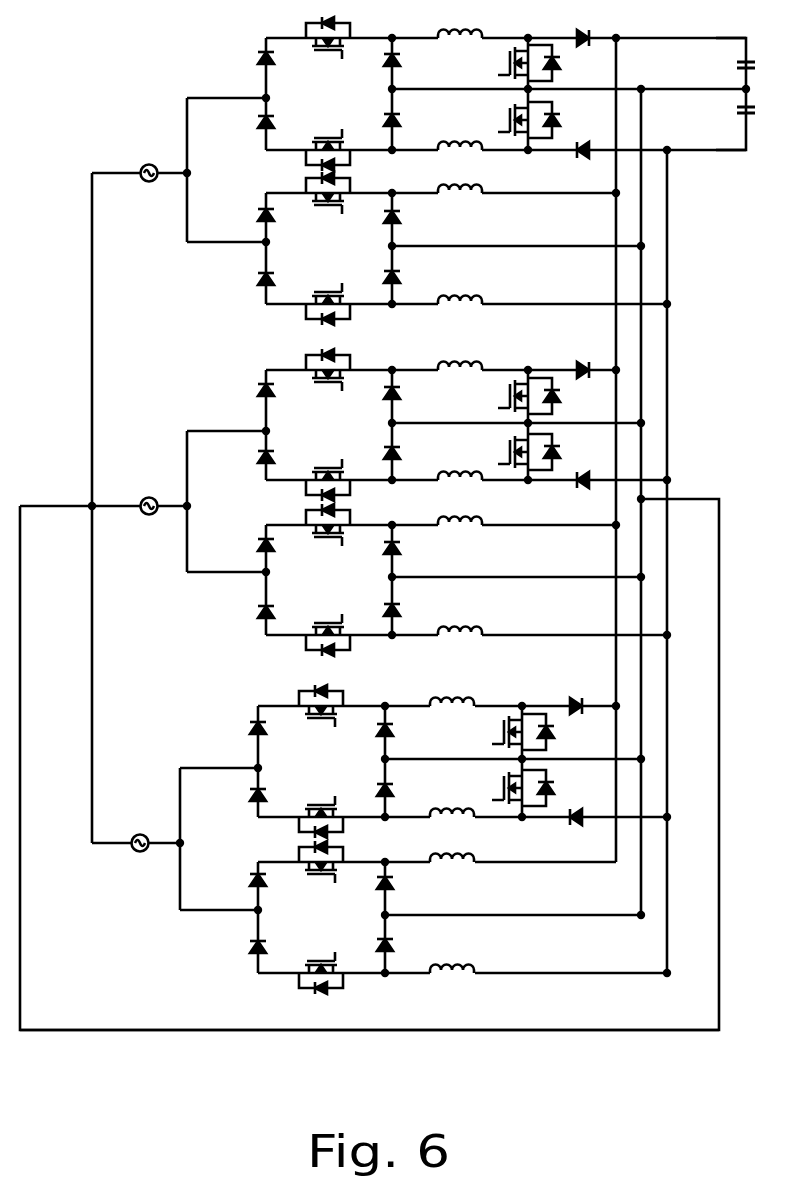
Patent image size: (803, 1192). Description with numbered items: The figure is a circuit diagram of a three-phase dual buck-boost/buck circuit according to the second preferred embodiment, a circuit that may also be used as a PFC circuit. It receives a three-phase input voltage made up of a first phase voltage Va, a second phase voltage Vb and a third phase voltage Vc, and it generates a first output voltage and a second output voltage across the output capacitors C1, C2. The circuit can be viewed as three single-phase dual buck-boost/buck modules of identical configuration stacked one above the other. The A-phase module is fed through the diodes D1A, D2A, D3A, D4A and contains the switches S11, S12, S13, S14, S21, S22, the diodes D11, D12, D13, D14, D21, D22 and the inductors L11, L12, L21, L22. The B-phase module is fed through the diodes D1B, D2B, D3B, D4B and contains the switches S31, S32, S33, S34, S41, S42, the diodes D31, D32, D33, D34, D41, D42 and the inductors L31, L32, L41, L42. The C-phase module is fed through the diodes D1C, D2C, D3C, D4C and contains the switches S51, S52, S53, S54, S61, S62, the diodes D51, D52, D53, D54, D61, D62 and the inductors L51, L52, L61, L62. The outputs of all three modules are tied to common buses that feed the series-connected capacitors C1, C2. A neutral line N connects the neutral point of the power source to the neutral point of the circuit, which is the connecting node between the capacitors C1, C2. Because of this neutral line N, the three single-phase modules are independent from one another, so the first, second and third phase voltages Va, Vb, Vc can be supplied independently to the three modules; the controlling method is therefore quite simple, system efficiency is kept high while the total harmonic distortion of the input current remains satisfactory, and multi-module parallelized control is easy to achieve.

The diode D1A is at (250, 59).
The diode D2A is at (250, 123).
The diode D3A is at (250, 216).
The diode D4A is at (250, 280).
The diode D1B is at (249, 391).
The diode D2B is at (249, 458).
The diode D3B is at (249, 546).
The diode D4B is at (249, 613).
The diode D1C is at (242, 729).
The diode D2C is at (242, 796).
The diode D3C is at (242, 881).
The diode D4C is at (242, 948).
The switch S11 is at (328, 46).
The switch S12 is at (328, 143).
The switch S13 is at (515, 63).
The switch S14 is at (515, 120).
The switch S21 is at (328, 200).
The switch S22 is at (328, 298).
The switch S31 is at (328, 377).
The switch S32 is at (328, 474).
The switch S33 is at (509, 396).
The switch S34 is at (511, 452).
The switch S41 is at (328, 532).
The switch S42 is at (328, 629).
The switch S51 is at (321, 714).
The switch S52 is at (321, 811).
The switch S53 is at (503, 732).
The switch S54 is at (503, 788).
The switch S61 is at (321, 870).
The switch S62 is at (321, 967).
The diode D11 is at (408, 61).
The diode D12 is at (408, 114).
The diode D13 is at (592, 46).
The diode D14 is at (586, 139).
The diode D21 is at (410, 218).
The diode D22 is at (408, 271).
The diode D31 is at (410, 394).
The diode D32 is at (410, 452).
The diode D33 is at (588, 379).
The diode D34 is at (583, 472).
The diode D41 is at (409, 549).
The diode D42 is at (409, 609).
The diode D51 is at (403, 732).
The diode D52 is at (403, 792).
The diode D53 is at (582, 714).
The diode D54 is at (578, 808).
The diode D61 is at (405, 884).
The diode D62 is at (405, 944).
The inductor L11 is at (460, 28).
The inductor L12 is at (460, 156).
The inductor L21 is at (460, 182).
The inductor L22 is at (460, 310).
The inductor L31 is at (460, 359).
The inductor L32 is at (460, 484).
The inductor L41 is at (460, 514).
The inductor L42 is at (460, 641).
The inductor L51 is at (452, 695).
The inductor L52 is at (452, 821).
The inductor L61 is at (452, 851).
The inductor L62 is at (452, 979).
The capacitor C1 is at (737, 66).
The capacitor C2 is at (737, 111).
The first phase voltage Va is at (149, 166).
The second phase voltage Vb is at (148, 499).
The third phase voltage Vc is at (139, 836).
The neutral line N is at (369, 1020).